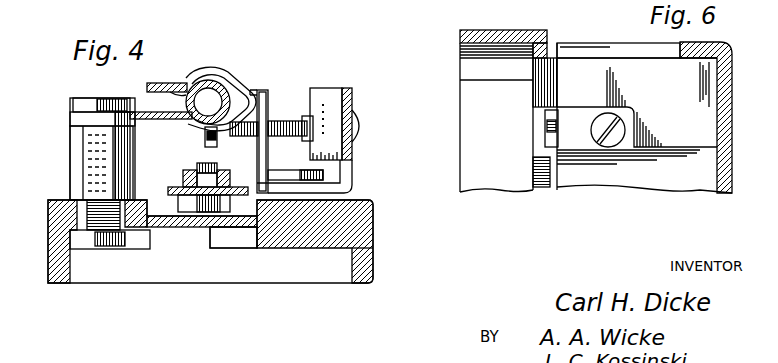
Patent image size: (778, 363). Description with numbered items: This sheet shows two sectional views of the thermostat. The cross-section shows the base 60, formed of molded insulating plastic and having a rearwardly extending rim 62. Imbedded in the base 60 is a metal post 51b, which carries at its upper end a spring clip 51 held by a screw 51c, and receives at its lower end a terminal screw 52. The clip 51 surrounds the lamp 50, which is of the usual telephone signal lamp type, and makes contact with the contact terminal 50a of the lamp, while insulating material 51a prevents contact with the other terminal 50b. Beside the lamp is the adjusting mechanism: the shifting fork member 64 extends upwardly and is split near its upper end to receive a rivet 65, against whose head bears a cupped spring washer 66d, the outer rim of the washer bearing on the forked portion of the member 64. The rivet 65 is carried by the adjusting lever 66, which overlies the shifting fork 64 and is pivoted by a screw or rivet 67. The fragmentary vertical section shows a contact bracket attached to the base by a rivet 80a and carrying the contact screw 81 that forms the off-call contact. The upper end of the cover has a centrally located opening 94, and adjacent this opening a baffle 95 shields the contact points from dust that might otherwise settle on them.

In FIG. 4, the lamp 50 is at (208, 102).
In FIG. 4, the contact terminal 50a is at (185, 121).
In FIG. 4, the other terminal 50b is at (180, 93).
In FIG. 4, the spring clip 51 is at (147, 112).
In FIG. 4, the insulating material 51a is at (206, 72).
In FIG. 4, the metal post 51b is at (73, 140).
In FIG. 4, the screw 51c is at (90, 98).
In FIG. 4, the terminal screw 52 is at (100, 240).
In FIG. 4, the base 60 is at (377, 237).
In FIG. 6, the base 60 is at (458, 168).
In FIG. 4, the rim 62 is at (376, 268).
In FIG. 4, the shifting fork member 64 is at (178, 190).
In FIG. 4, the rivet 65 is at (233, 230).
In FIG. 4, the adjusting lever 66 is at (187, 172).
In FIG. 4, the cupped spring washer 66d is at (183, 208).
In FIG. 4, the screw or rivet 67 is at (204, 163).
In FIG. 6, the rivet 80a is at (563, 148).
In FIG. 4, the contact screw 81 is at (288, 120).
In FIG. 6, the contact screw 81 is at (611, 148).
In FIG. 6, the opening 94 is at (580, 50).
In FIG. 6, the baffle 95 is at (637, 104).